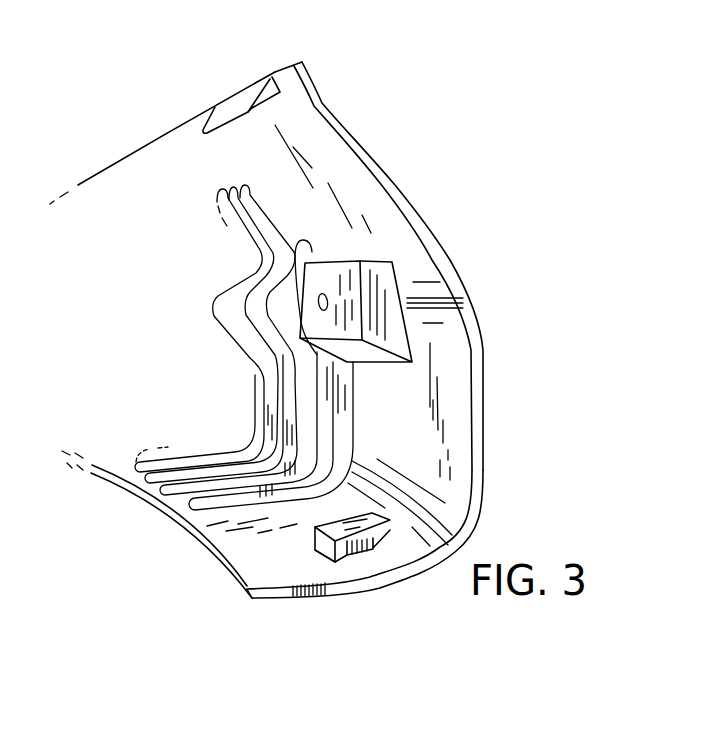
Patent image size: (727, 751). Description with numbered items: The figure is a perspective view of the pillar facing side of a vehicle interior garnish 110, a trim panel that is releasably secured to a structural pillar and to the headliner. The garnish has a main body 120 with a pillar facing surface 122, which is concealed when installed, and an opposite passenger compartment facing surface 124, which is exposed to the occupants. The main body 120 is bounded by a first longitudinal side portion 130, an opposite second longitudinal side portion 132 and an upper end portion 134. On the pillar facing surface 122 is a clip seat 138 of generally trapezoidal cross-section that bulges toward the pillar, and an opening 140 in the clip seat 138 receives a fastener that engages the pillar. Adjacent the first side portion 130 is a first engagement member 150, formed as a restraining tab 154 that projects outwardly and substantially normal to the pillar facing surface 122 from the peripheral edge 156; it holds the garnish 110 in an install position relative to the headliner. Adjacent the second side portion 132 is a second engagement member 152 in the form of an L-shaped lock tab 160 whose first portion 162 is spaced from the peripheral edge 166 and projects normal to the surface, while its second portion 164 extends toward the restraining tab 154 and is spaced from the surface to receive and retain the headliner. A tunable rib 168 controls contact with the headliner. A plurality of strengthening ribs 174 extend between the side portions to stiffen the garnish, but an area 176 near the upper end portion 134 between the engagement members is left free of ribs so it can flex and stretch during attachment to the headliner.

The interior garnish 110 is at (498, 387).
The main body 120 is at (483, 358).
The pillar facing surface 122 is at (455, 438).
The passenger compartment facing surface 124 is at (484, 438).
The first longitudinal side portion 130 is at (174, 134).
The second longitudinal side portion 132 is at (192, 528).
The upper end portion 134 is at (418, 558).
The clip seat 138 is at (350, 275).
The opening 140 is at (318, 297).
The first engagement member 150 is at (235, 88).
The second engagement member 152 is at (308, 563).
The restraining tab 154 is at (217, 115).
The peripheral edge 156 is at (278, 66).
The L-shaped lock tab 160 is at (399, 517).
The first portion 162 is at (314, 532).
The second portion 164 is at (383, 539).
The peripheral edge 166 is at (205, 549).
The tunable rib 168 is at (355, 557).
The strengthening ribs 174 is at (247, 357).
The area 176 is at (395, 410).